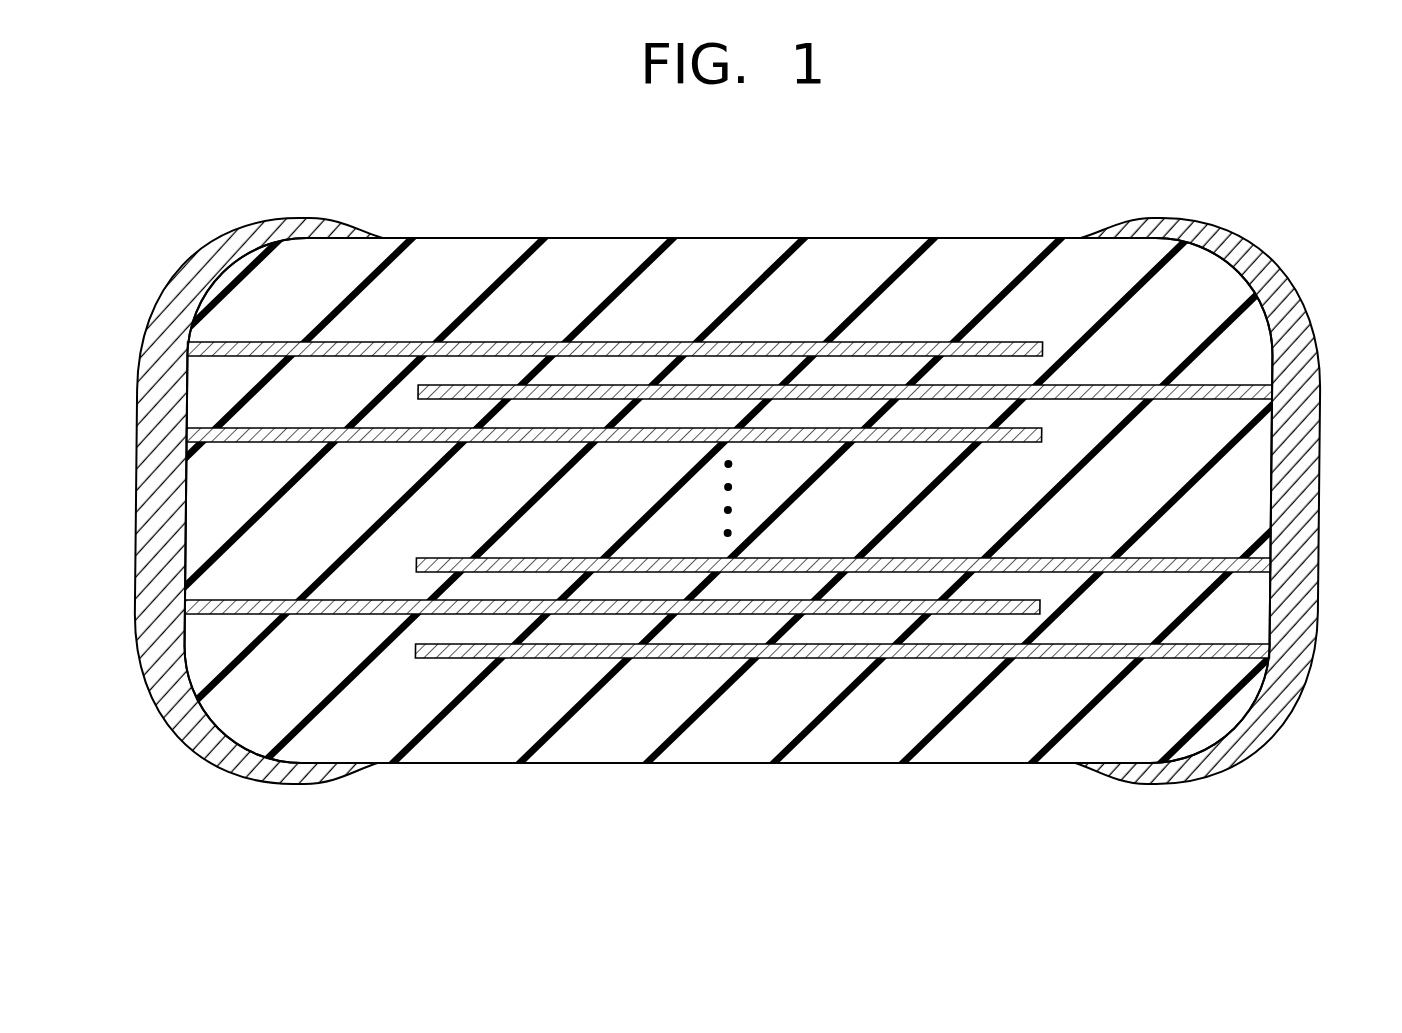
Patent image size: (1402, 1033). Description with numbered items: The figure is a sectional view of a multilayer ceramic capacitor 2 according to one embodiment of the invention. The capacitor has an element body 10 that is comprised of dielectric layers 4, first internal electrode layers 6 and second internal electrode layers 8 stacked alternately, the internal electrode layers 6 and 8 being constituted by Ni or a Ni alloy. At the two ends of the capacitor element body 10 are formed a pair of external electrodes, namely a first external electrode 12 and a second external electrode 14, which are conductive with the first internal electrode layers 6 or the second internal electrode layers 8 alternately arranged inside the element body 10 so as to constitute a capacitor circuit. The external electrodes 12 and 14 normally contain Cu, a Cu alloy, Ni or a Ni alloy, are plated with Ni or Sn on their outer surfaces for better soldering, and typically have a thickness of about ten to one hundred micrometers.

The multilayer ceramic capacitor 2 is at (877, 778).
The dielectric layers 4 is at (820, 372).
The first internal electrode layers 6 is at (940, 342).
The second internal electrode layers 8 is at (514, 385).
The element body 10 is at (492, 745).
The first external electrode 12 is at (175, 722).
The second external electrode 14 is at (1318, 540).